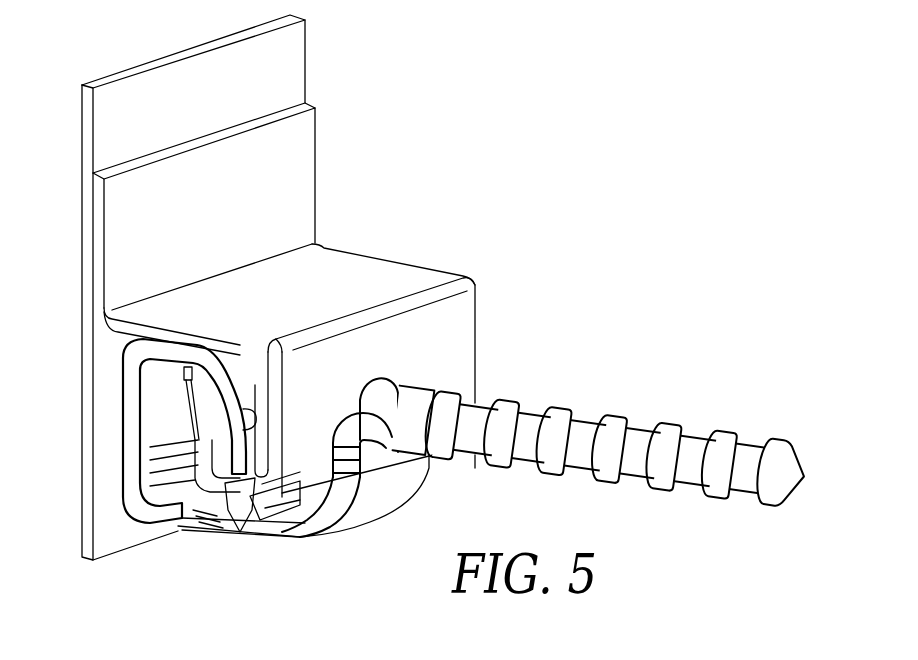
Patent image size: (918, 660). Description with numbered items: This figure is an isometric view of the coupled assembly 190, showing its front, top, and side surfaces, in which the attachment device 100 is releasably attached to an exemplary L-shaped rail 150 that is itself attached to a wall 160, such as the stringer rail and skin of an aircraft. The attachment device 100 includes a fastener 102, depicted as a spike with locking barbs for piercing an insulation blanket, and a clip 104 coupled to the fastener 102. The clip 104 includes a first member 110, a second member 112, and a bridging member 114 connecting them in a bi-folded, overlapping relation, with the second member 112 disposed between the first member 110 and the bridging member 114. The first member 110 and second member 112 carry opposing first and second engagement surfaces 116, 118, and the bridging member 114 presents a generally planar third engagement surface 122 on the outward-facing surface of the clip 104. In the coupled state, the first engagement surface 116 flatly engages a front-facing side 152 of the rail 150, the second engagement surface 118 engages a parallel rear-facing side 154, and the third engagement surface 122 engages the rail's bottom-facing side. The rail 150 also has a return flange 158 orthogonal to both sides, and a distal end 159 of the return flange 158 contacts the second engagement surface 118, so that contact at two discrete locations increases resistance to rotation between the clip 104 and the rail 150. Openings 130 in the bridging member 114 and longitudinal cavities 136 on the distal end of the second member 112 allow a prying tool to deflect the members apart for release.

The attachment device 100 is at (513, 287).
The fastener 102 is at (457, 394).
The clip 104 is at (144, 518).
The first member 110 is at (293, 372).
The second member 112 is at (240, 355).
The bridging member 114 is at (137, 437).
The first engagement surface 116 is at (259, 395).
The second engagement surface 118 is at (240, 400).
The third engagement surface 122 is at (136, 345).
The openings 130 is at (198, 515).
The longitudinal cavities 136 is at (217, 510).
The rail 150 is at (275, 283).
The front-facing side 152 is at (282, 457).
The rear-facing side 154 is at (160, 477).
The return flange 158 is at (290, 497).
The distal end 159 is at (257, 527).
The wall 160 is at (288, 66).
The coupled assembly 190 is at (567, 190).